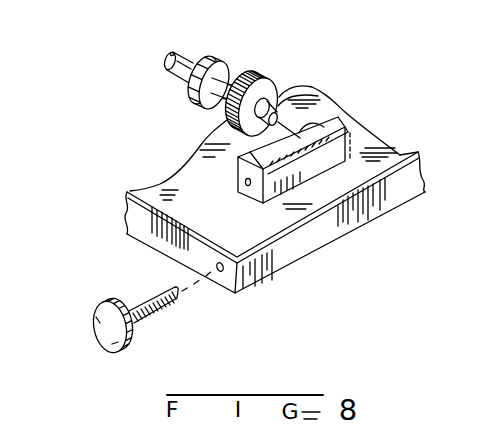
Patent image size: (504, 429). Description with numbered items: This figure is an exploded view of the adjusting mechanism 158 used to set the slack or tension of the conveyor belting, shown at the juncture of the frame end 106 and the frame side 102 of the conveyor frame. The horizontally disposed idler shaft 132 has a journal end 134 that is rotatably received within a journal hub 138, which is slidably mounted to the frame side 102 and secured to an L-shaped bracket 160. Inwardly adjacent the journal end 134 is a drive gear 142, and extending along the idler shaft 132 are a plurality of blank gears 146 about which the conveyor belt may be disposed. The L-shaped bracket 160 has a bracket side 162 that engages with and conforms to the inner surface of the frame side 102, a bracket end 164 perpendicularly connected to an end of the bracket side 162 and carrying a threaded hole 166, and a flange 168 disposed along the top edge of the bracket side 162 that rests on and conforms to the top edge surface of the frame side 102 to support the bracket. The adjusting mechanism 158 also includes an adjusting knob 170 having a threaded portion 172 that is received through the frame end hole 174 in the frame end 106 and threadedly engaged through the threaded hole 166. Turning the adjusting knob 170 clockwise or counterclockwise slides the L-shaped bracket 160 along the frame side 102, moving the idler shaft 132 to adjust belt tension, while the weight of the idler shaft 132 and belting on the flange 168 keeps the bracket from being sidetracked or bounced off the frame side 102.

The frame side 102 is at (362, 210).
The frame end 106 is at (138, 236).
The idler shaft 132 is at (186, 56).
The journal end 134 is at (271, 110).
The journal hub 138 is at (320, 121).
The drive gear 142 is at (263, 80).
The blank gear 146 is at (189, 88).
The adjusting mechanism 158 is at (325, 80).
The L-shaped bracket 160 is at (337, 145).
The bracket side 162 is at (313, 172).
The bracket end 164 is at (259, 199).
The threaded hole 166 is at (236, 186).
The flange 168 is at (352, 124).
The adjusting knob 170 is at (93, 319).
The threaded portion 172 is at (158, 305).
The frame end hole 174 is at (211, 258).